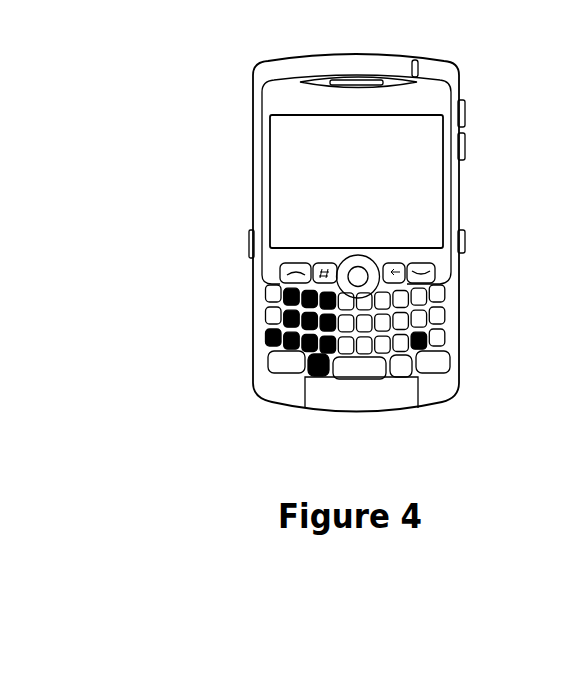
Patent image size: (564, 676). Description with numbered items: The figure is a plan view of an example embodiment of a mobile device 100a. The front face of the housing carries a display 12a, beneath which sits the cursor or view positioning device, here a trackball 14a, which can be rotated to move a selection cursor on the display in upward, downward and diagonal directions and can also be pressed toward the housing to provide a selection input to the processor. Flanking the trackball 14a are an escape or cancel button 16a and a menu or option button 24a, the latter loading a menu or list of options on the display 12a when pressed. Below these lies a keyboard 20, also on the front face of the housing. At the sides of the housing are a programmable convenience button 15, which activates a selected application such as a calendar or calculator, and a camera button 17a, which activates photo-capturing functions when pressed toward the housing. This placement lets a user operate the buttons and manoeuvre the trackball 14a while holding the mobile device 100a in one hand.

The mobile device 100a is at (158, 131).
The display 12a is at (340, 176).
The trackball 14a is at (354, 268).
The programmable convenience button 15 is at (251, 247).
The escape or cancel button 16a is at (397, 273).
The camera button 17a is at (467, 240).
The keyboard 20 is at (265, 386).
The menu or option button 24a is at (320, 275).